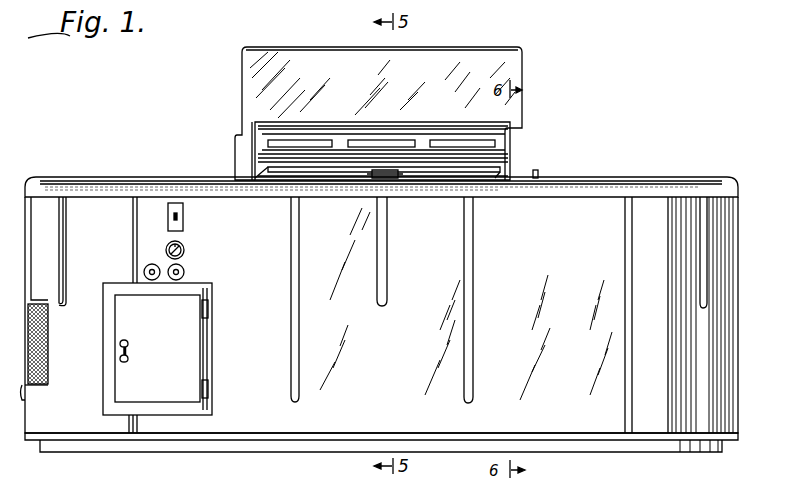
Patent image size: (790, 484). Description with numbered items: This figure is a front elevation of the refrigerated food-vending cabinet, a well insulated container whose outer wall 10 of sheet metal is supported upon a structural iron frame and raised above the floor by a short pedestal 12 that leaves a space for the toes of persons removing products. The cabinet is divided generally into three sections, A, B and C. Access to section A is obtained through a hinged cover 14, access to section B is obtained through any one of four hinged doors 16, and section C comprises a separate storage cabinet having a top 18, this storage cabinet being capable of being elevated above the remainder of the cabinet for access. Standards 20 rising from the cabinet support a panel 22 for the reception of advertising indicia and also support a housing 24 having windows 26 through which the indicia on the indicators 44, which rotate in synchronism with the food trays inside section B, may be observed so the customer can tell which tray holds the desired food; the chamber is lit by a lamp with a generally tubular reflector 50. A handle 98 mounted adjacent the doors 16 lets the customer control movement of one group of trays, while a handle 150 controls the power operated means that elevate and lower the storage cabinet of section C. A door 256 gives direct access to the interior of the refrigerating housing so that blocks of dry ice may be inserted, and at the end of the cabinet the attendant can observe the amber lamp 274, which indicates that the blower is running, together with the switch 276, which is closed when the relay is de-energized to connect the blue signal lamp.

The outer wall 10 is at (185, 414).
The pedestal 12 is at (228, 440).
The hinged cover 14 is at (152, 178).
The hinged doors 16 is at (258, 180).
The top 18 is at (670, 180).
The standards 20 is at (235, 150).
The panel 22 is at (513, 66).
The housing 24 is at (497, 128).
The windows 26 is at (492, 140).
The indicators 44 is at (392, 143).
The reflector 50 is at (300, 166).
The handle 98 is at (385, 178).
The handle 150 is at (536, 172).
The door 256 is at (188, 385).
The lamp 274 is at (184, 271).
The switch 276 is at (144, 271).
The section A is at (205, 222).
The section B is at (442, 232).
The section C is at (585, 212).